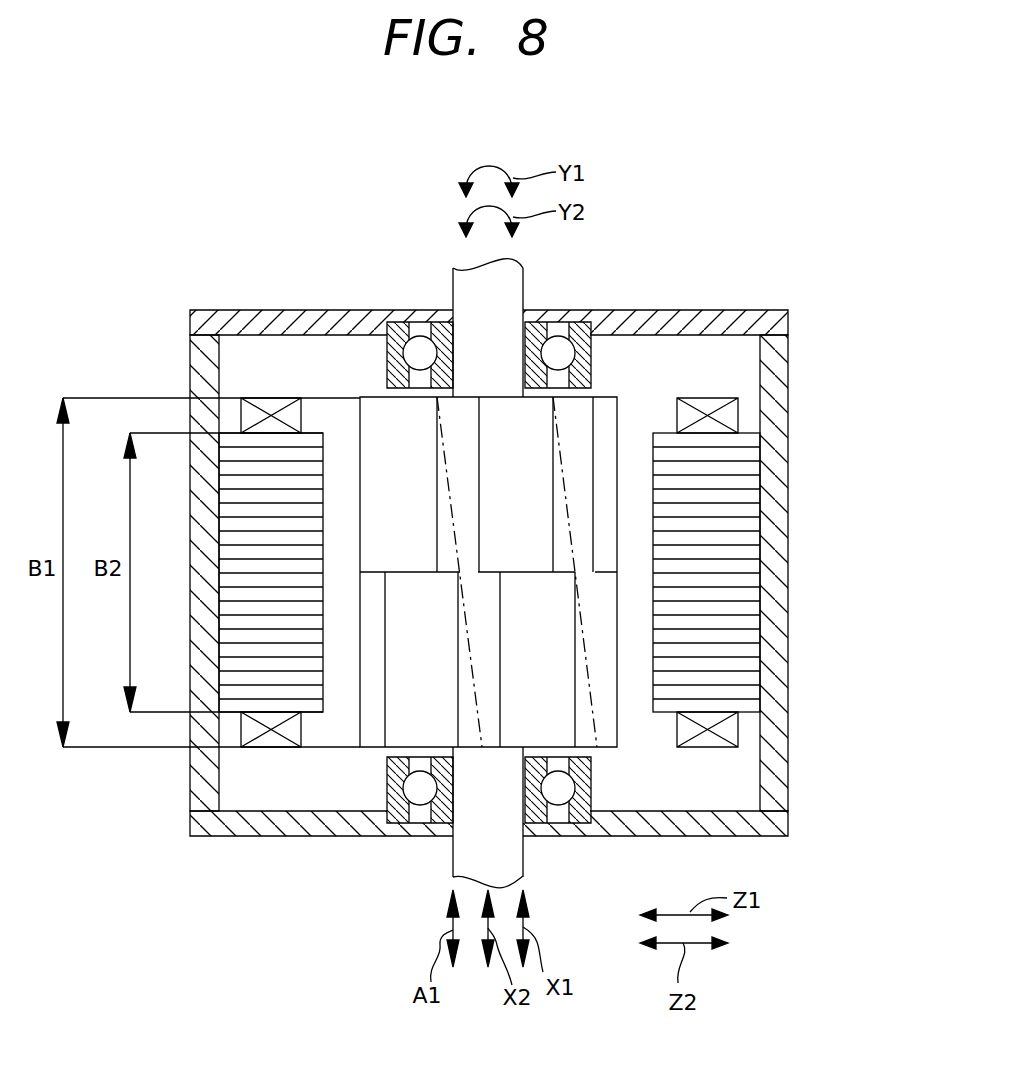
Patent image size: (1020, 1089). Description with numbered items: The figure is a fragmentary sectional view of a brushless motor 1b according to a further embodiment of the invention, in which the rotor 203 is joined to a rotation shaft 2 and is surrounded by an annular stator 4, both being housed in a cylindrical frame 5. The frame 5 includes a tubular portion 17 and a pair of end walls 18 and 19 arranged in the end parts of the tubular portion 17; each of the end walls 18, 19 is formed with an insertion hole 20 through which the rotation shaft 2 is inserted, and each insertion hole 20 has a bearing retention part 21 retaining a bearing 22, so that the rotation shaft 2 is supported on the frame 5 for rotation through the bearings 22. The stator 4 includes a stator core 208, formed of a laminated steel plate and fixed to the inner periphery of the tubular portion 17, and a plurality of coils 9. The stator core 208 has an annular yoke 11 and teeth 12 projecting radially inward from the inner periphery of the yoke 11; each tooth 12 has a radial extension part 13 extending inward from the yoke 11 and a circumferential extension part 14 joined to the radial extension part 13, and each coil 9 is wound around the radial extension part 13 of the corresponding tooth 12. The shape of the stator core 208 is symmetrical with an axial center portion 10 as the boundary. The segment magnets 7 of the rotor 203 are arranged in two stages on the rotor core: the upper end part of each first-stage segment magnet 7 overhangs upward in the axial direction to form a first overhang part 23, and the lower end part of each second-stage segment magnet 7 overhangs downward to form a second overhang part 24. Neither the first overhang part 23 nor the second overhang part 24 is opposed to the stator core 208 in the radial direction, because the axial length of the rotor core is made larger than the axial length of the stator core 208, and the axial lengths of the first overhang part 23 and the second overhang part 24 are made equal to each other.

The brushless motor 1b is at (479, 568).
The rotation shaft 2 is at (505, 302).
The stator 4 is at (775, 463).
The frame 5 is at (800, 742).
The segment magnets 7 is at (506, 568).
The coils 9 is at (276, 410).
The axial center portion 10 is at (707, 572).
The yoke 11 is at (240, 485).
The teeth 12 is at (479, 633).
The radial extension part 13 is at (707, 636).
The circumferential extension part 14 is at (663, 663).
The tubular portion 17 is at (777, 790).
The end wall 18 is at (690, 827).
The end wall 19 is at (697, 318).
The insertion hole 20 is at (509, 578).
The bearing retention part 21 is at (590, 328).
The bearing 22 is at (420, 353).
The first overhang part 23 is at (510, 412).
The second overhang part 24 is at (433, 735).
The rotor 203 is at (620, 381).
The stator core 208 is at (775, 518).